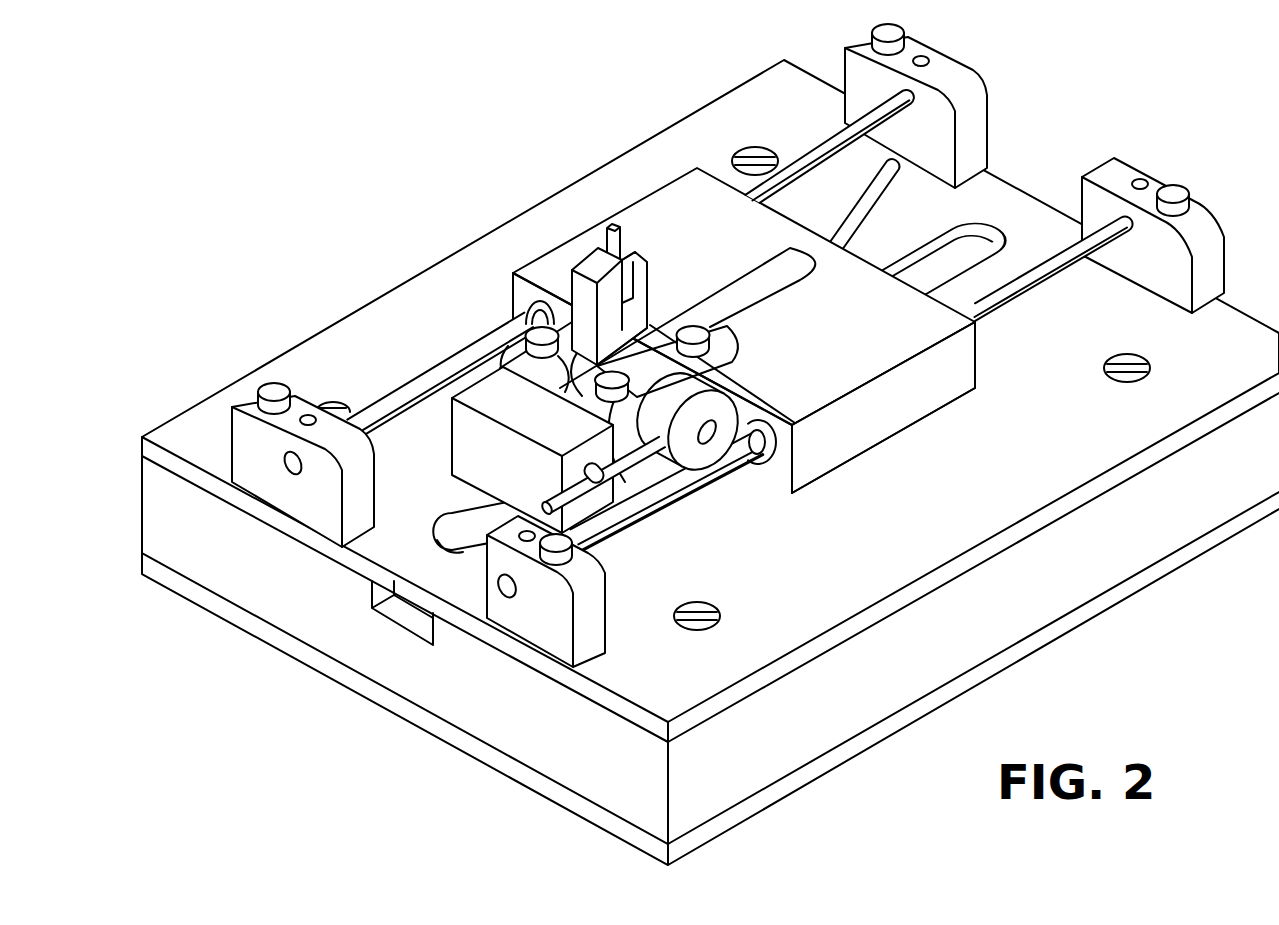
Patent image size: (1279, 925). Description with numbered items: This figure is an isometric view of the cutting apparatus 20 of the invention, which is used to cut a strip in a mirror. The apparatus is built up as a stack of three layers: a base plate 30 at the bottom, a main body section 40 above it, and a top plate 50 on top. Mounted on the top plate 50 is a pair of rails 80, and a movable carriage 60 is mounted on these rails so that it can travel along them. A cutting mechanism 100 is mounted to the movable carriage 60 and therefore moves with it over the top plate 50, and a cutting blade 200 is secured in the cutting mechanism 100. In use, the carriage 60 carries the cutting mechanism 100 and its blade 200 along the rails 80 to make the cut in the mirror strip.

The cutting apparatus 20 is at (334, 265).
The base plate 30 is at (160, 578).
The main body section 40 is at (158, 500).
The top plate 50 is at (190, 432).
The movable carriage 60 is at (873, 427).
The rails 80 is at (422, 385).
The cutting mechanism 100 is at (614, 364).
The cutting blade 200 is at (621, 228).